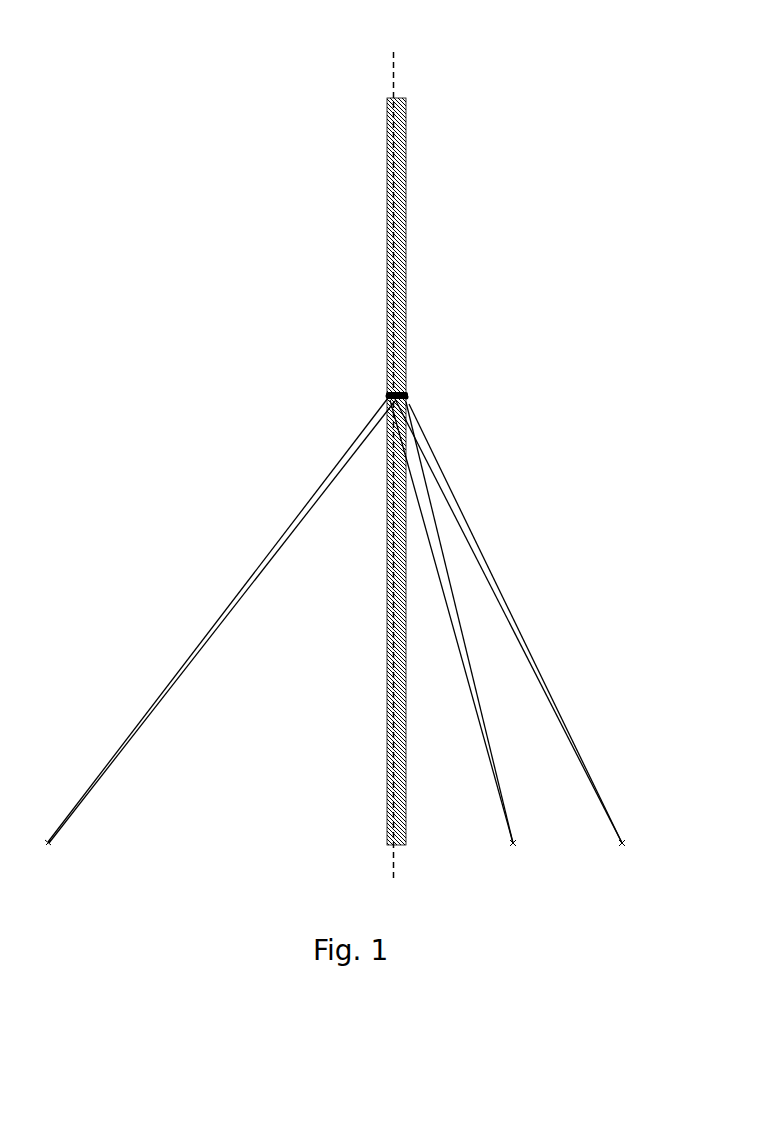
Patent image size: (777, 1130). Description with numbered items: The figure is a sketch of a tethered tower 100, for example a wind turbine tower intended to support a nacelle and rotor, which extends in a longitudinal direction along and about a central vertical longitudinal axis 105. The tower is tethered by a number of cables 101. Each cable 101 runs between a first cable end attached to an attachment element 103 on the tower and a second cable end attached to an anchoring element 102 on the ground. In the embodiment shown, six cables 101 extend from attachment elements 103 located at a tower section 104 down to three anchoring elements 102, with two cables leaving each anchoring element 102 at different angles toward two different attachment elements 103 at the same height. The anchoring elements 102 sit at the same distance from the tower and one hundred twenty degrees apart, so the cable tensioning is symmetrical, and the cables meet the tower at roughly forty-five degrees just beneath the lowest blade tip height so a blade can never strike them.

The tower 100 is at (191, 305).
The cable 101 is at (293, 512).
The anchoring element 102 is at (49, 843).
The attachment element 103 is at (390, 395).
The tower section 104 is at (390, 393).
The central vertical longitudinal axis 105 is at (390, 83).